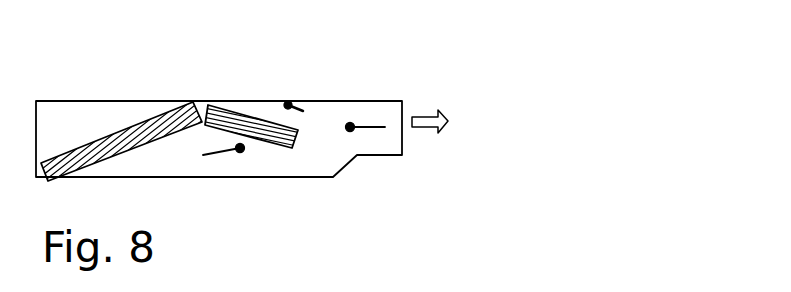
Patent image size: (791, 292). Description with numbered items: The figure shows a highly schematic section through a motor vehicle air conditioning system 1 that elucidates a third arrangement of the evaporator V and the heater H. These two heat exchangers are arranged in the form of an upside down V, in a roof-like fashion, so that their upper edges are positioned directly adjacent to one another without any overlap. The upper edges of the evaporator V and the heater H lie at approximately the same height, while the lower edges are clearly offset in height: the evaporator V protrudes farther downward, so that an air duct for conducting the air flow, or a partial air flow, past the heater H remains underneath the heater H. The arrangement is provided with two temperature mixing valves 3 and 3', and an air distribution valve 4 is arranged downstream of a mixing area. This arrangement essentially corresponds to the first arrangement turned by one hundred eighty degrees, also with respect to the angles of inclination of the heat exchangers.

The motor vehicle air conditioning system 1 is at (592, 52).
The temperature mixing valve 3 is at (224, 200).
The temperature mixing valve 3' is at (310, 71).
The air distribution valve 4 is at (350, 127).
The heater H is at (239, 125).
The evaporator V is at (111, 133).